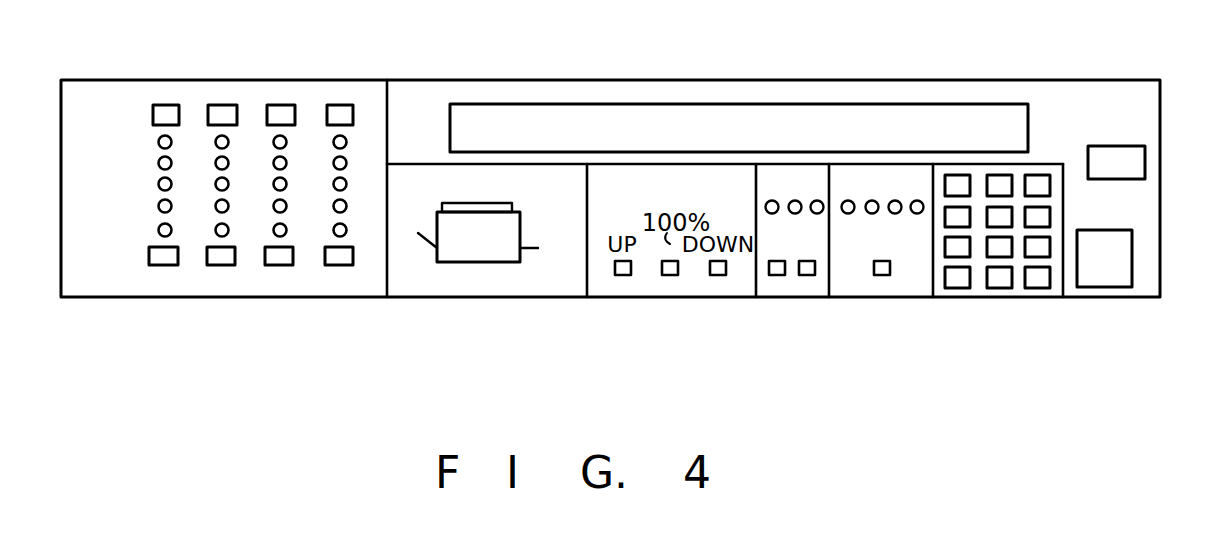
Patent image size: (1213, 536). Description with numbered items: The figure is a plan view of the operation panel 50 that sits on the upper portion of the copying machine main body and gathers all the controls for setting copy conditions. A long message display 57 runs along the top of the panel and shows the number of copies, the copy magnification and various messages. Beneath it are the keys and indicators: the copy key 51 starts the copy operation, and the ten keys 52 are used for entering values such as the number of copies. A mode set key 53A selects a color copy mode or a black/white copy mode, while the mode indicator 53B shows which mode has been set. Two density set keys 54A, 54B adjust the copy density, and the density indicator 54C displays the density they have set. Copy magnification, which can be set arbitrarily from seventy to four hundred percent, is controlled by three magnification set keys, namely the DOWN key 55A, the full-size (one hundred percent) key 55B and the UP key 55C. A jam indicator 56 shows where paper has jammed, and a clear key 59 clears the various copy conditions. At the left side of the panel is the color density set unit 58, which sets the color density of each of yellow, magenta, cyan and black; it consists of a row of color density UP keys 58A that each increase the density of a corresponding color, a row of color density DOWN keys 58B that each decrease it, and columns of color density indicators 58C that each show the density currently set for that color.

The operation panel 50 is at (757, 76).
The copy key 51 is at (1110, 270).
The ten keys 52 is at (1017, 290).
The mode set key 53A is at (882, 276).
The mode indicator 53B is at (862, 216).
The density set key 54A is at (807, 276).
The density set key 54B is at (777, 276).
The density indicator 54C is at (767, 224).
The DOWN key 55A is at (718, 276).
The 100% key 55B is at (670, 276).
The UP key 55C is at (622, 276).
The jam indicator 56 is at (493, 248).
The message display 57 is at (626, 112).
The color density set unit 58 is at (113, 101).
The color density UP keys 58A is at (172, 112).
The color density DOWN keys 58B is at (165, 265).
The color density indicators 58C is at (133, 217).
The clear key 59 is at (1145, 162).